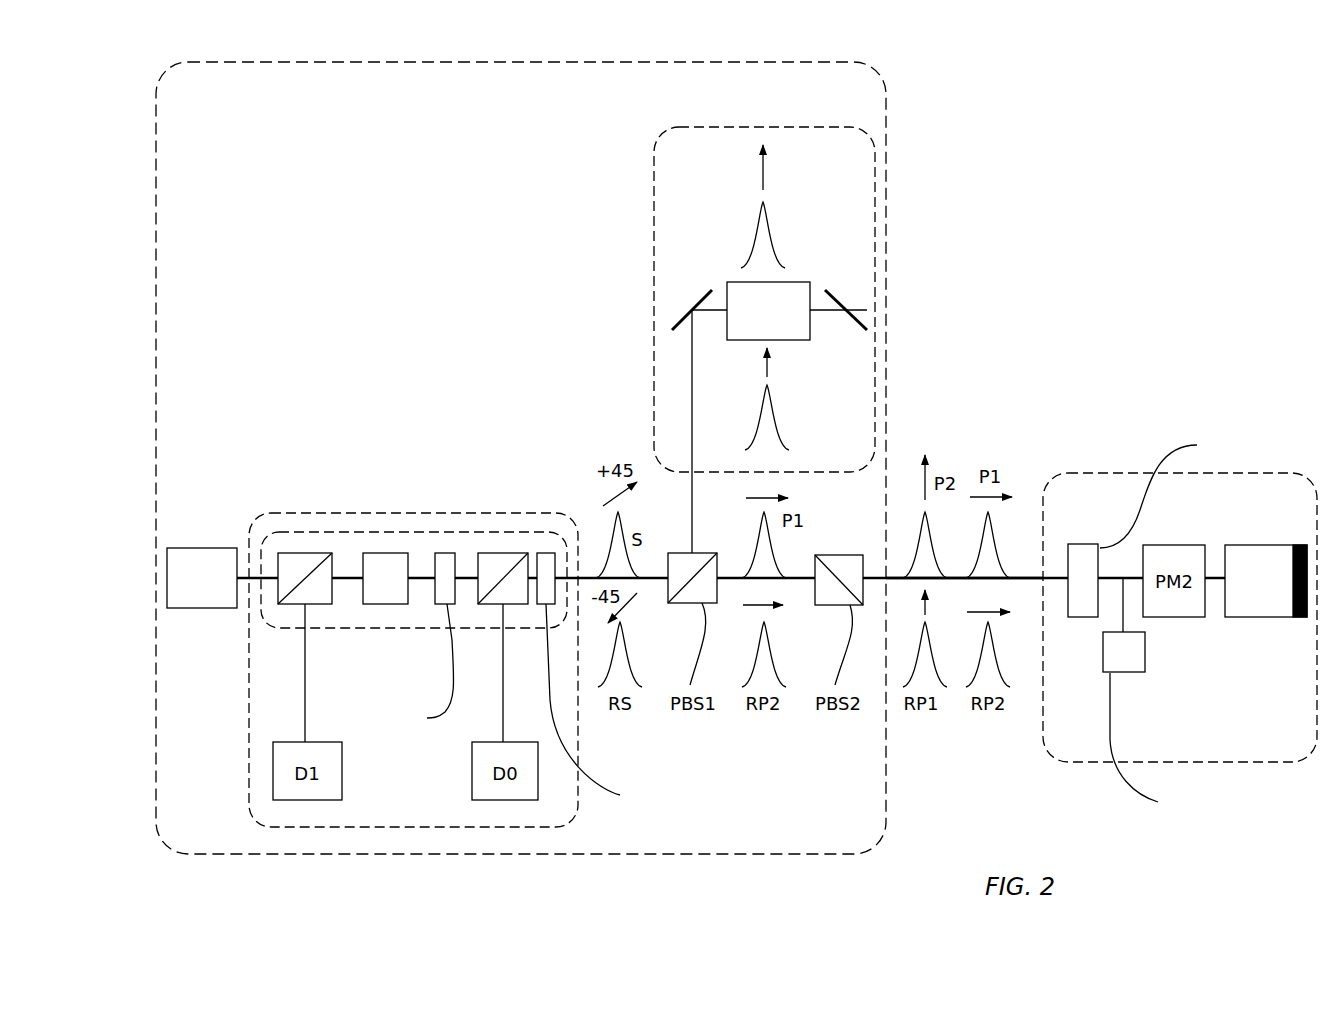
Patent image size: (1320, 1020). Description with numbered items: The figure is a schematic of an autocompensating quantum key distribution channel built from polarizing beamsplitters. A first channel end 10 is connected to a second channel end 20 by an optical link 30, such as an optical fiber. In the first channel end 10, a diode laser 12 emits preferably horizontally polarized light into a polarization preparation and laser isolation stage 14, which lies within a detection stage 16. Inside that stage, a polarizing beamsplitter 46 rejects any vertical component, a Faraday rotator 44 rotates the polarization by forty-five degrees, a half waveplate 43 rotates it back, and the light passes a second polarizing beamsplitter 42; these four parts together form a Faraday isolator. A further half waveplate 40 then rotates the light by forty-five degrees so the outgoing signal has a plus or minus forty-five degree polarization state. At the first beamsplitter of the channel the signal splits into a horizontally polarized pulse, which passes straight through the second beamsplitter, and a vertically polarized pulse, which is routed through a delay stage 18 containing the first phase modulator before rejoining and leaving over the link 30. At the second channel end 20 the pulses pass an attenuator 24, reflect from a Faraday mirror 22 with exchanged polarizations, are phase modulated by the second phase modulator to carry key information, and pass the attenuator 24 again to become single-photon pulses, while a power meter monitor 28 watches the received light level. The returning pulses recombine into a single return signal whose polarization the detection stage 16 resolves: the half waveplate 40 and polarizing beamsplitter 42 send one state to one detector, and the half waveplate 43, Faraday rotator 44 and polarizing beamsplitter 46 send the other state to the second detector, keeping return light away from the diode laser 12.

The first channel end 10 is at (656, 62).
The diode laser 12 is at (178, 548).
The polarization preparation and laser isolation stage 14 is at (423, 629).
The detection stage 16 is at (248, 742).
The delay stage 18 is at (763, 126).
The second channel end 20 is at (1078, 472).
The Faraday mirror 22 is at (1267, 617).
The attenuator 24 is at (1080, 543).
The power meter monitor 28 is at (1120, 673).
The optical link 30 is at (1027, 578).
The half waveplate 40 is at (545, 553).
The polarizing beamsplitter 42 is at (487, 553).
The half waveplate 43 is at (443, 553).
The Faraday rotator 44 is at (385, 553).
The polarizing beamsplitter 46 is at (295, 553).